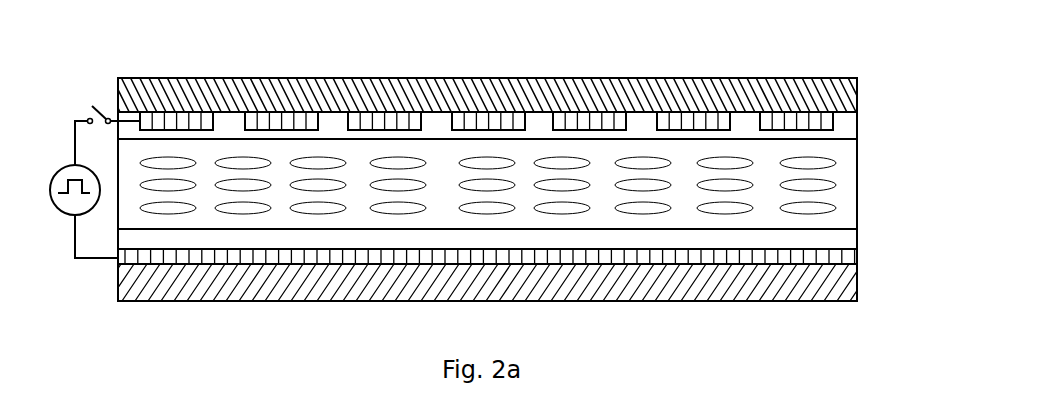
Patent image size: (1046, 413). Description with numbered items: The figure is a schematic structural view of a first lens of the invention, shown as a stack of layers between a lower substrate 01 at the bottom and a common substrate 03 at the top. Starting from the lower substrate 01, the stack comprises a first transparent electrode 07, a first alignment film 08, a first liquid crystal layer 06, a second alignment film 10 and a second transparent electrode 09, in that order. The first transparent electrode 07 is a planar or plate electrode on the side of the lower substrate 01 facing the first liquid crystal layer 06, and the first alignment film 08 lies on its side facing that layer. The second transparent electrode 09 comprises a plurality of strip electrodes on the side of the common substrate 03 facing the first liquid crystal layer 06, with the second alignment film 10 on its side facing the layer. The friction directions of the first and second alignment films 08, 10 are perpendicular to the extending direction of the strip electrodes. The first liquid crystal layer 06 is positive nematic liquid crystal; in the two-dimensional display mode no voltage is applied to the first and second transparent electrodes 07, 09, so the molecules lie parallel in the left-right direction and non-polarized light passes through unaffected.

The lower substrate 01 is at (857, 288).
The common substrate 03 is at (857, 92).
The first liquid crystal layer 06 is at (832, 195).
The first transparent electrode 07 is at (857, 260).
The first alignment film 08 is at (857, 235).
The second transparent electrode 09 is at (797, 122).
The second alignment film 10 is at (857, 125).